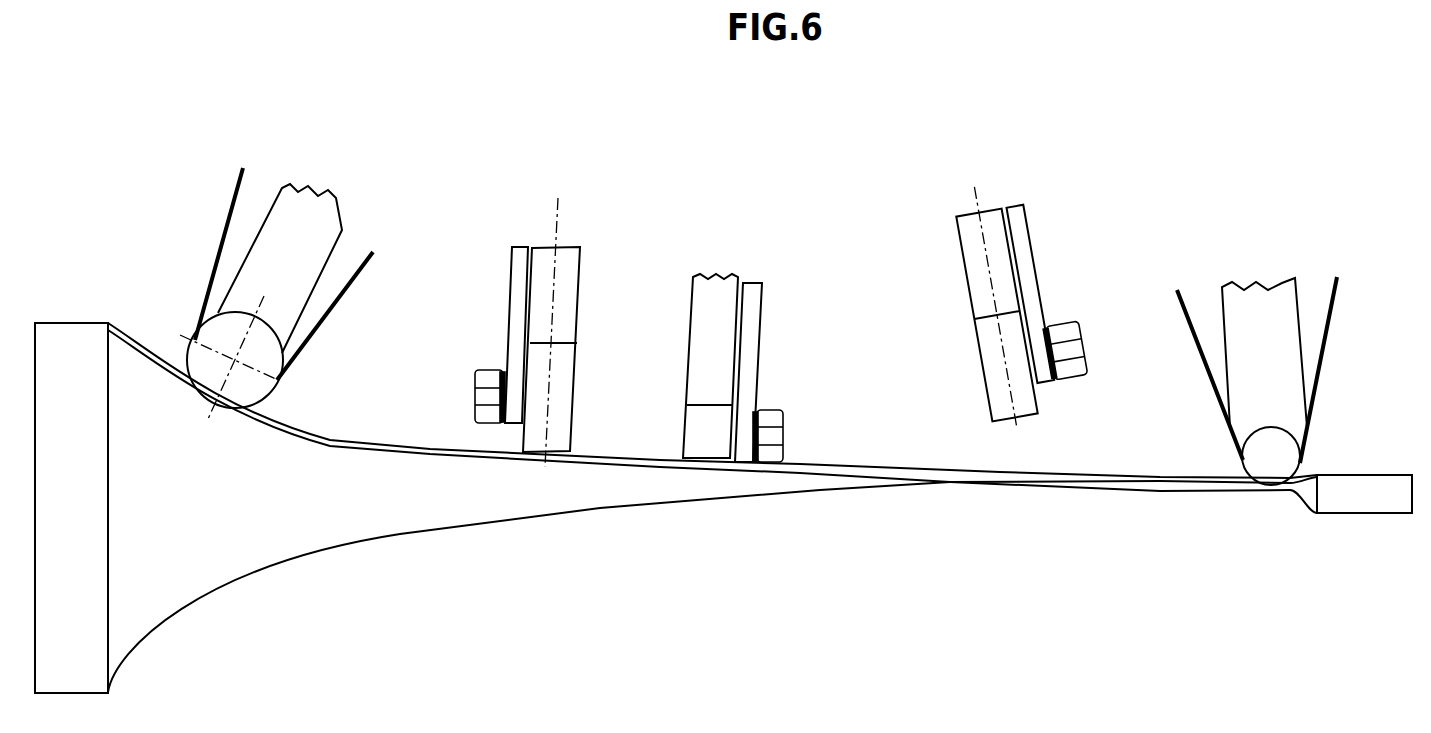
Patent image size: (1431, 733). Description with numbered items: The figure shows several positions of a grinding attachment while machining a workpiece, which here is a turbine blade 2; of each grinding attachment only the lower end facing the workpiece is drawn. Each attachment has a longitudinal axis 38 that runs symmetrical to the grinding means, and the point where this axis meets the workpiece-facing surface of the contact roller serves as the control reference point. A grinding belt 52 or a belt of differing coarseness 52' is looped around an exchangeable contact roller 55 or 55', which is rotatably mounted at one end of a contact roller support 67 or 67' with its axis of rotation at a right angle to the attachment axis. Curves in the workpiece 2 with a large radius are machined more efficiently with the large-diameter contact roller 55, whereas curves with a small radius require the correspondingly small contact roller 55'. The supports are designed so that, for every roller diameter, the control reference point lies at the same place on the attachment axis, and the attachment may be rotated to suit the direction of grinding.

The turbine blade 2 is at (402, 514).
The longitudinal axis of the grinding attachment 38 is at (255, 300).
The grinding belt 52 is at (456, 274).
The grinding belt 52' is at (1173, 302).
The contact roller 55 is at (612, 330).
The contact roller 55' is at (1050, 379).
The contact roller support 67 is at (762, 286).
The contact roller support 67' is at (788, 340).